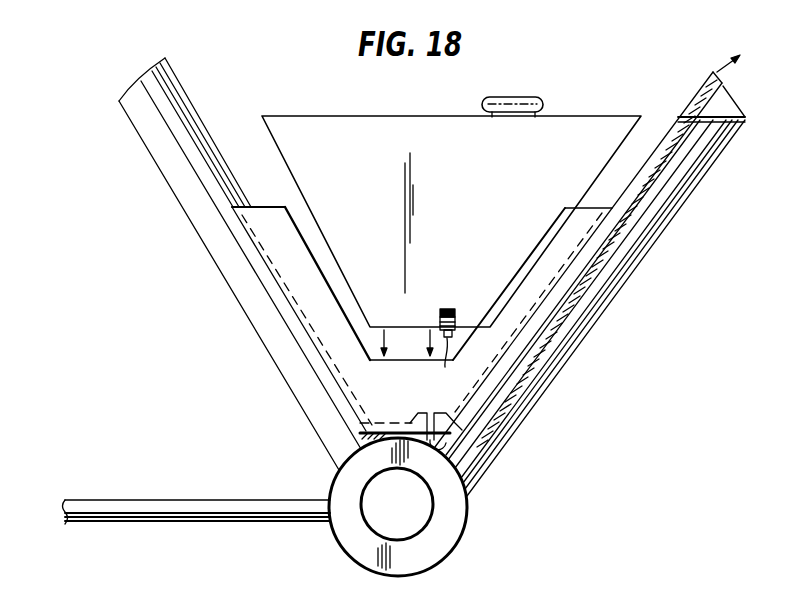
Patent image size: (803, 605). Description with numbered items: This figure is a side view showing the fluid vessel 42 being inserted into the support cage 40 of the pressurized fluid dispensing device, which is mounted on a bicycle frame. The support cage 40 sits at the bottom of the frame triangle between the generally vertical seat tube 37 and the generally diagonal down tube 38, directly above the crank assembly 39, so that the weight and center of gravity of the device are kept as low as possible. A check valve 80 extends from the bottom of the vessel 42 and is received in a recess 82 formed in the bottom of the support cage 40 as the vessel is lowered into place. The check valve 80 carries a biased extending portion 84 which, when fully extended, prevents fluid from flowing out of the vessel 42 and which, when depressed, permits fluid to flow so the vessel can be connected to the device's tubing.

The seat tube 37 is at (253, 324).
The down tube 38 is at (617, 287).
The crank assembly 39 is at (465, 498).
The support cage 40 is at (243, 207).
The fluid vessel 42 is at (393, 116).
The check valve 80 is at (456, 312).
The recess 82 is at (399, 402).
The extending portion 84 is at (445, 366).